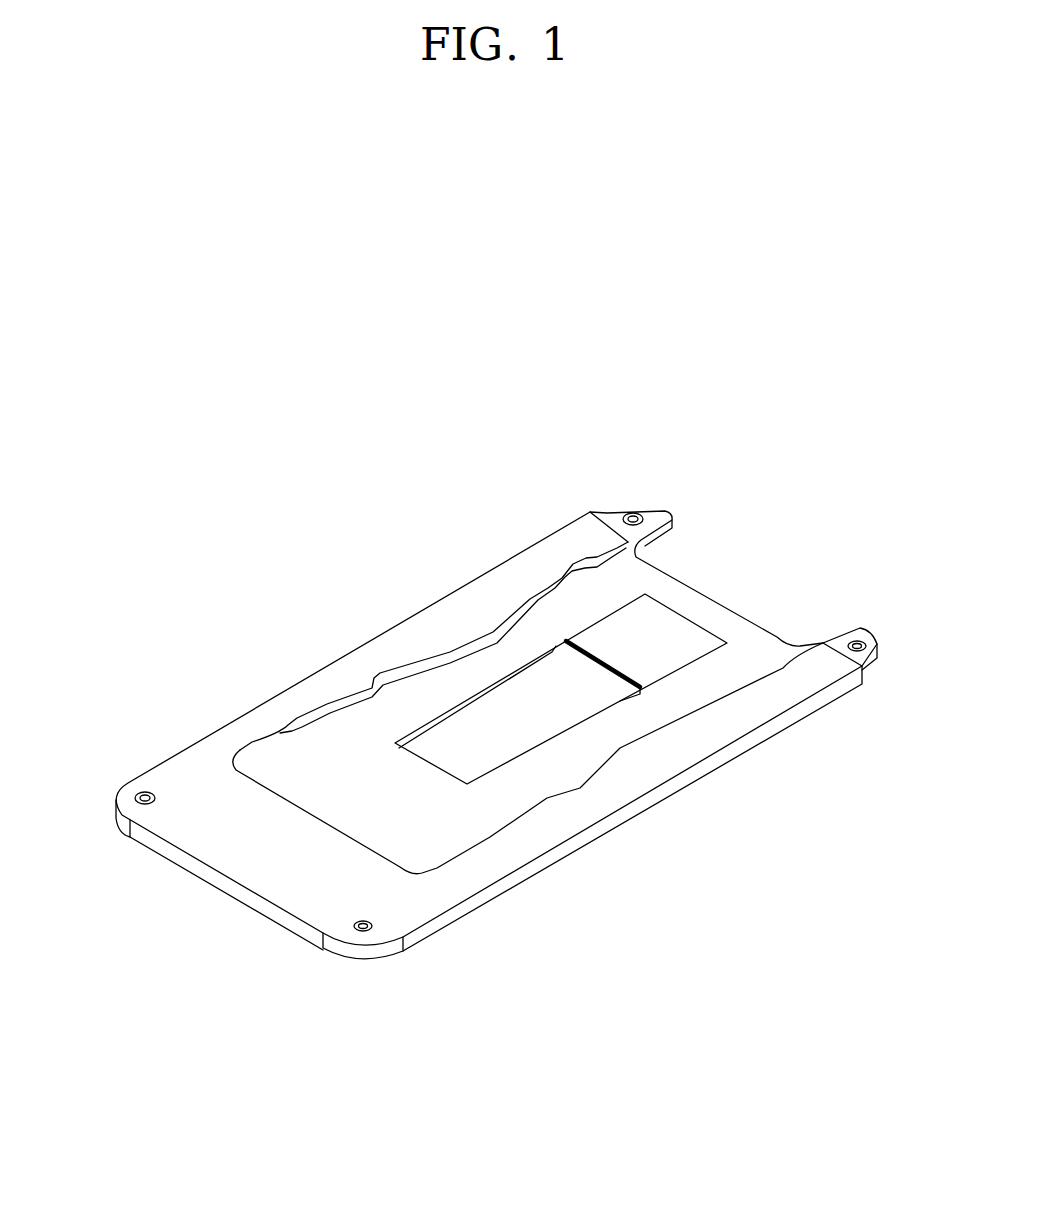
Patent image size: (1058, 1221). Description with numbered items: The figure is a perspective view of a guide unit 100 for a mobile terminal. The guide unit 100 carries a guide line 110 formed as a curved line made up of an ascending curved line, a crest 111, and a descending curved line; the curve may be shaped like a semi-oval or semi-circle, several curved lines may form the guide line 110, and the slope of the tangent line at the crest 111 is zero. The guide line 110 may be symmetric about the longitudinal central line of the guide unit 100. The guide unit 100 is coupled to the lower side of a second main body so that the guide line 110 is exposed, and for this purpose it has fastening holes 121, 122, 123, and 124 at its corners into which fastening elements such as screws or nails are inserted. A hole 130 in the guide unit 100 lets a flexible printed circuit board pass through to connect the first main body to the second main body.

The guide unit 100 is at (200, 428).
The guide line 110 is at (465, 650).
The crest 111 is at (488, 632).
The fastening hole 121 is at (143, 792).
The fastening hole 122 is at (635, 514).
The fastening hole 123 is at (858, 642).
The fastening hole 124 is at (367, 923).
The hole 130 is at (480, 743).